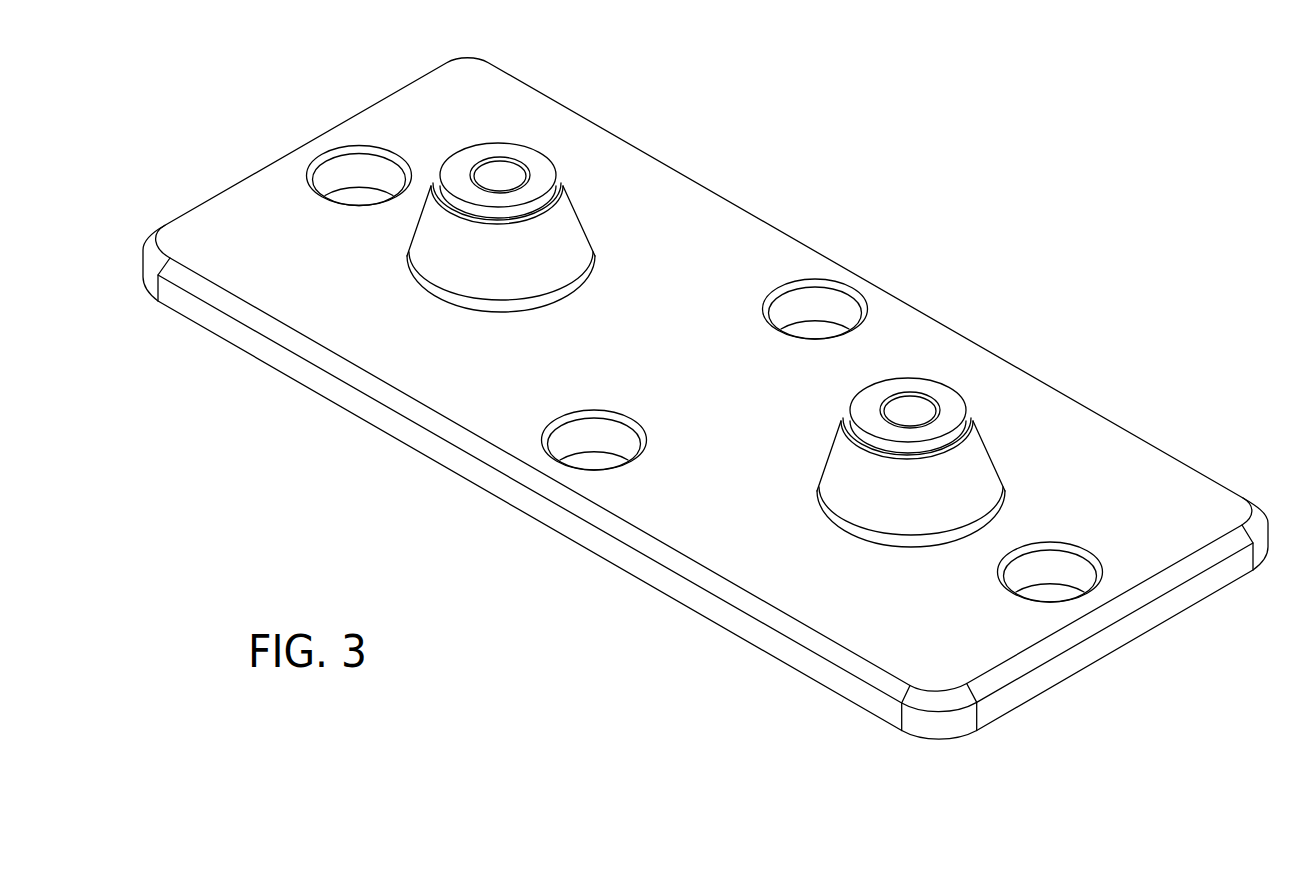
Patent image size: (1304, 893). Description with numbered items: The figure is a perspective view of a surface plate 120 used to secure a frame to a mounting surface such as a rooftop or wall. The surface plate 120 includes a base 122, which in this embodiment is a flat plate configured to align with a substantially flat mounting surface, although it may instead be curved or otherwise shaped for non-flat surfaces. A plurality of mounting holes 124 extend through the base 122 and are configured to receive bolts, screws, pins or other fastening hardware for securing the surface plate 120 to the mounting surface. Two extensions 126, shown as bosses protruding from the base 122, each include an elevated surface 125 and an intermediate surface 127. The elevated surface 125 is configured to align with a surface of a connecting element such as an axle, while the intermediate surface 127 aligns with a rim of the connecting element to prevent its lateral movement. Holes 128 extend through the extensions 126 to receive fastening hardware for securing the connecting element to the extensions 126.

The surface plate 120 is at (237, 502).
The base 122 is at (484, 379).
The mounting holes 124 is at (343, 178).
The elevated surface 125 is at (522, 158).
The extensions 126 is at (565, 160).
The intermediate surface 127 is at (472, 208).
The holes 128 is at (501, 178).